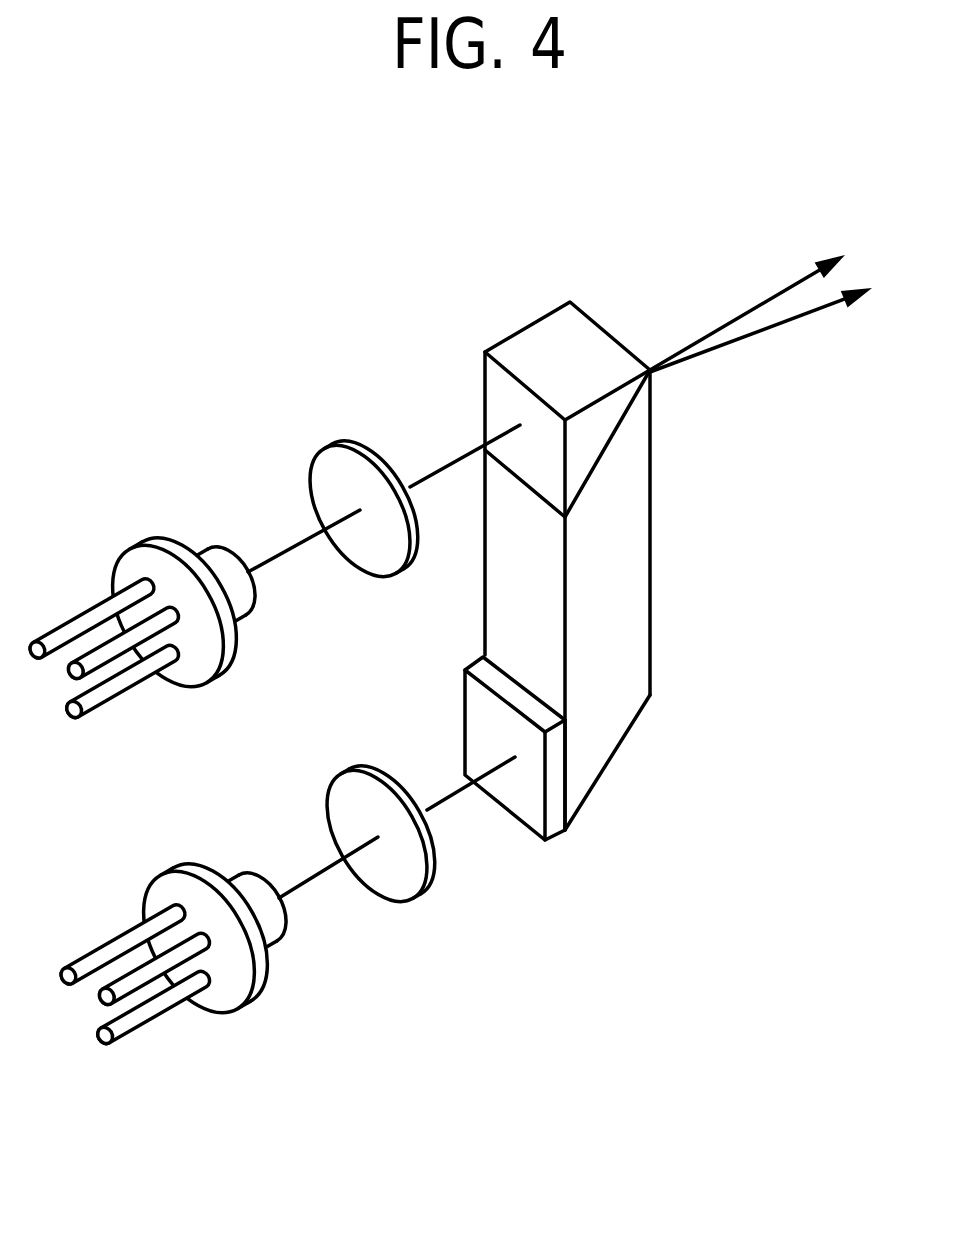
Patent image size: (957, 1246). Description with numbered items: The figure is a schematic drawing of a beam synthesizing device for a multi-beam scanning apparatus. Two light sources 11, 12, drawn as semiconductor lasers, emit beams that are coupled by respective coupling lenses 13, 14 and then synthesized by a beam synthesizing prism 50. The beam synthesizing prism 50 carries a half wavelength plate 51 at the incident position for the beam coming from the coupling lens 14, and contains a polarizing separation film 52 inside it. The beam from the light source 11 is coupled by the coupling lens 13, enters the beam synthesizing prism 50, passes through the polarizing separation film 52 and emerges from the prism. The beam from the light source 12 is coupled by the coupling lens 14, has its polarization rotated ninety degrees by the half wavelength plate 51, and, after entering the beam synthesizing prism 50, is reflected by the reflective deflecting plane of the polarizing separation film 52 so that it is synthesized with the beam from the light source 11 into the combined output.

The light source 11 is at (135, 560).
The light source 12 is at (217, 1003).
The coupling lens 13 is at (335, 460).
The coupling lens 14 is at (398, 890).
The beam synthesizing prism 50 is at (602, 532).
The 1/2 wavelength plate 51 is at (535, 818).
The polarizing separation film 52 is at (592, 477).